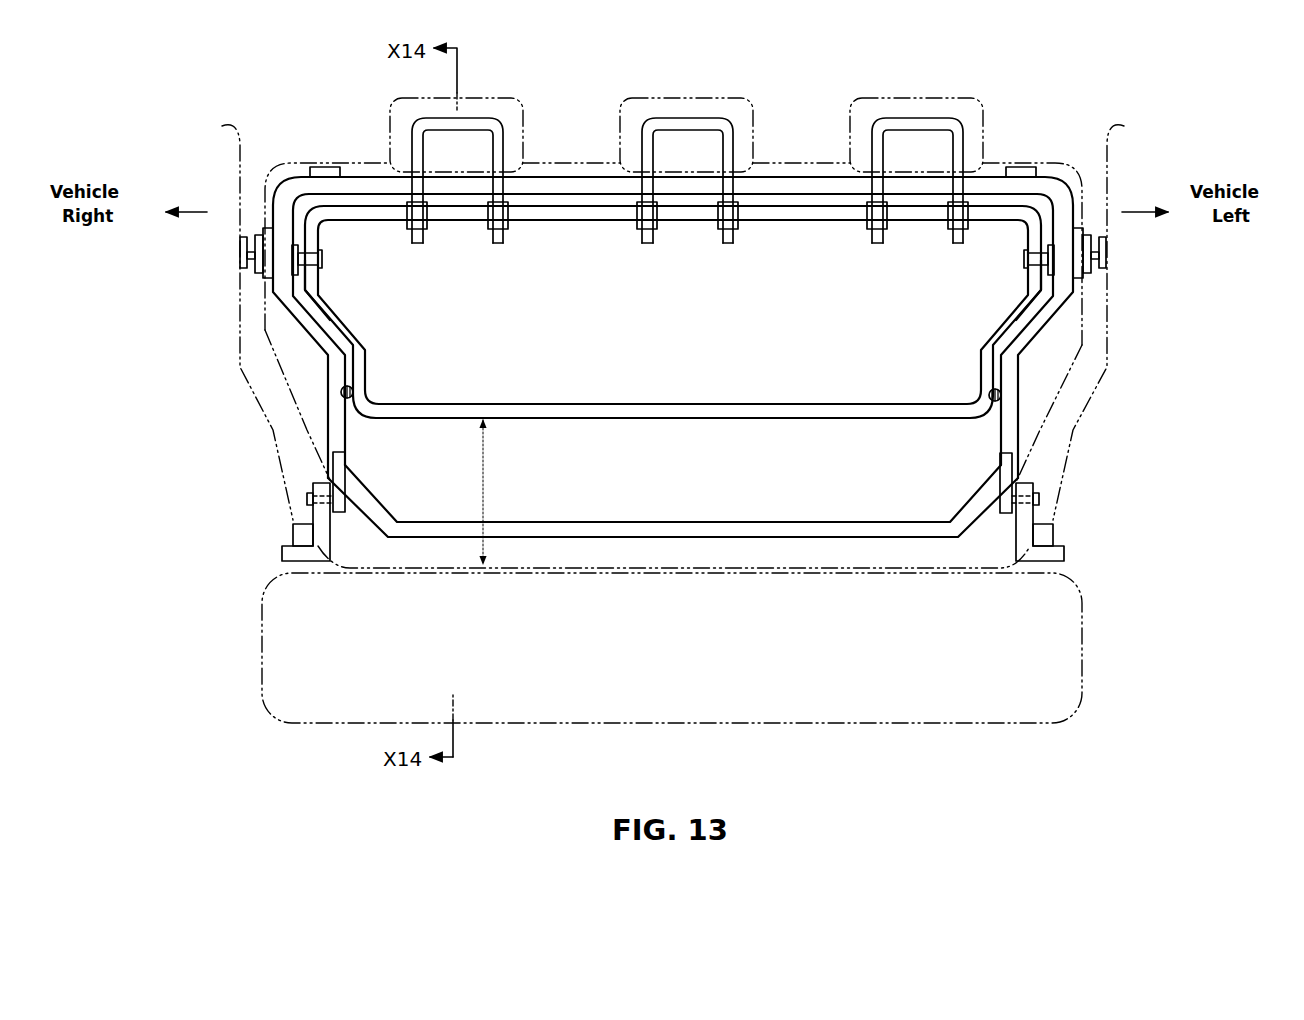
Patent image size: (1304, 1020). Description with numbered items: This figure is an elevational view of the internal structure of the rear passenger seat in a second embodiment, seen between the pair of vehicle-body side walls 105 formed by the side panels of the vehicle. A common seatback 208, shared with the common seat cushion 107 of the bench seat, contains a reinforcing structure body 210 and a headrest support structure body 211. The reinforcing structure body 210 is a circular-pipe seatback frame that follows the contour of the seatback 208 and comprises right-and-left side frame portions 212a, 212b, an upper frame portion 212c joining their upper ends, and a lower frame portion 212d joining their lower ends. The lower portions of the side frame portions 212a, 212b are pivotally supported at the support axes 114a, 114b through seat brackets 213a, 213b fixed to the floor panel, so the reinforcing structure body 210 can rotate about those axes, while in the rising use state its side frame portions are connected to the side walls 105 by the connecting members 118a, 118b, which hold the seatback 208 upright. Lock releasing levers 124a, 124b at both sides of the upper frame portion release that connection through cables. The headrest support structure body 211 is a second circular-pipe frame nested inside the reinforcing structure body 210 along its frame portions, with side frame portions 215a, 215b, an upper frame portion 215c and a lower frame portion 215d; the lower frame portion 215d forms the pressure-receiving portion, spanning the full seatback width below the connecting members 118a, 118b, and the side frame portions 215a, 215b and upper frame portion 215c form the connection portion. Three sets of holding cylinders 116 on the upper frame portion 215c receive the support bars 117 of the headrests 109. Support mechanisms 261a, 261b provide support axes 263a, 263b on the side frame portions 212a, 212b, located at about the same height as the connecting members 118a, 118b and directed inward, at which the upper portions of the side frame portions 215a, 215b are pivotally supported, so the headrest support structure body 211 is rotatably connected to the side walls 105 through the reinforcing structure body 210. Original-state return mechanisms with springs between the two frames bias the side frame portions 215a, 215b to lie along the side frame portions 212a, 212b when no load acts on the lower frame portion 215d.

The vehicle-body side wall 105 is at (237, 121).
The common seat cushion 107 is at (1084, 600).
The headrest 109 is at (402, 98).
The support axis 114a is at (307, 499).
The support axis 114b is at (1040, 499).
The holding cylinder 116 is at (492, 226).
The support bar 117 is at (420, 155).
The connecting member 118a is at (240, 258).
The connecting member 118b is at (1110, 254).
The lock releasing lever 124a is at (320, 167).
The lock releasing lever 124b is at (1018, 167).
The common seatback 208 is at (1066, 157).
The reinforcing structure body 210 is at (671, 354).
The headrest support structure body 211 is at (673, 298).
The side frame portion 212a is at (310, 332).
The side frame portion 212b is at (1032, 330).
The upper frame portion 212c is at (808, 187).
The lower frame portion 212d is at (687, 538).
The seat bracket 213a is at (315, 527).
The seat bracket 213b is at (1022, 528).
The side frame portion 215a is at (358, 355).
The side frame portion 215b is at (990, 353).
The upper frame portion 215c is at (372, 212).
The lower frame portion 215d is at (750, 419).
The support mechanism 261a is at (301, 283).
The support mechanism 261b is at (1045, 284).
The support axis 263a is at (313, 250).
The support axis 263b is at (1026, 262).